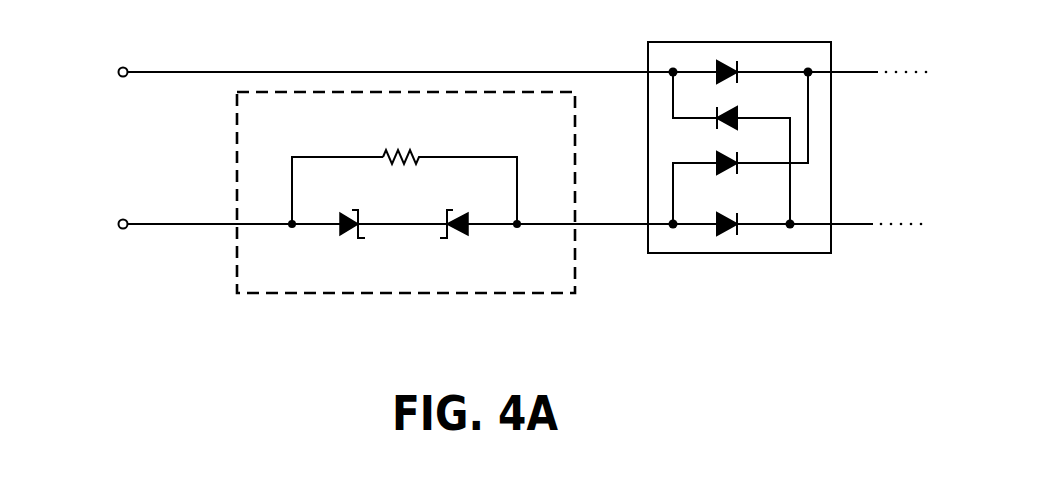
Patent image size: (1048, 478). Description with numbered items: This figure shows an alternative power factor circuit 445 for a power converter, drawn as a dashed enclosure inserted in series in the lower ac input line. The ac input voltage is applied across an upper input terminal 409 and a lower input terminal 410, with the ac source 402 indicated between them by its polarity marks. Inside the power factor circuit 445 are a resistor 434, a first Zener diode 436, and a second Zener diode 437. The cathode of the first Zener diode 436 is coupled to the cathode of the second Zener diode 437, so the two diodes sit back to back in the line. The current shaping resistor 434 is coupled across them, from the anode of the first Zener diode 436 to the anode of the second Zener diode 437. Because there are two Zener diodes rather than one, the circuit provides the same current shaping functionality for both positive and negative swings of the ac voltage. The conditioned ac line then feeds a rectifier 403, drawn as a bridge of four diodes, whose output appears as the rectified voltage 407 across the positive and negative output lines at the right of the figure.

The AC input voltage VAC 402 is at (92, 128).
The rectifier 403 is at (646, 44).
The rectified output voltage VRECT 407 is at (952, 150).
The first input terminal 409 is at (126, 66).
The second input terminal 410 is at (122, 230).
The resistor R2 434 is at (446, 134).
The first Zener diode VR1 436 is at (324, 258).
The second Zener diode VR2 437 is at (514, 250).
The power factor circuit 445 is at (300, 300).